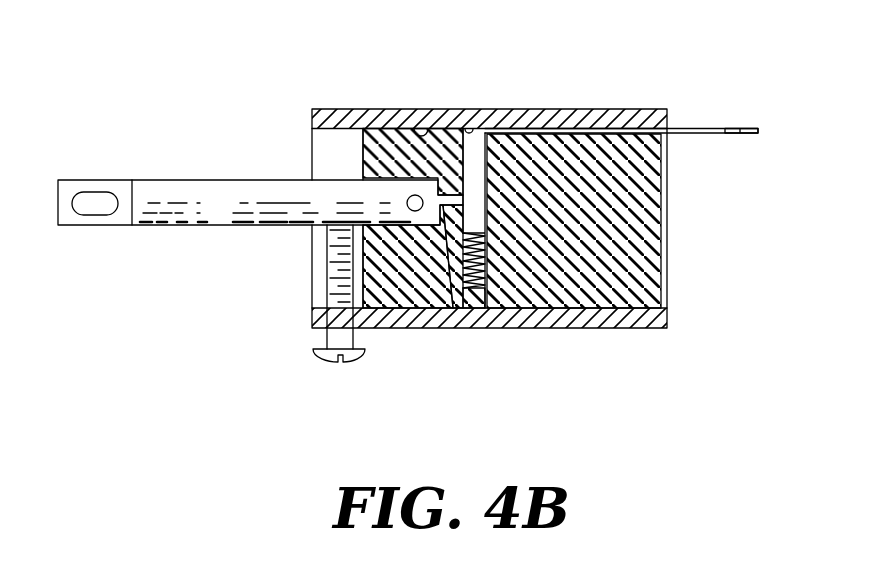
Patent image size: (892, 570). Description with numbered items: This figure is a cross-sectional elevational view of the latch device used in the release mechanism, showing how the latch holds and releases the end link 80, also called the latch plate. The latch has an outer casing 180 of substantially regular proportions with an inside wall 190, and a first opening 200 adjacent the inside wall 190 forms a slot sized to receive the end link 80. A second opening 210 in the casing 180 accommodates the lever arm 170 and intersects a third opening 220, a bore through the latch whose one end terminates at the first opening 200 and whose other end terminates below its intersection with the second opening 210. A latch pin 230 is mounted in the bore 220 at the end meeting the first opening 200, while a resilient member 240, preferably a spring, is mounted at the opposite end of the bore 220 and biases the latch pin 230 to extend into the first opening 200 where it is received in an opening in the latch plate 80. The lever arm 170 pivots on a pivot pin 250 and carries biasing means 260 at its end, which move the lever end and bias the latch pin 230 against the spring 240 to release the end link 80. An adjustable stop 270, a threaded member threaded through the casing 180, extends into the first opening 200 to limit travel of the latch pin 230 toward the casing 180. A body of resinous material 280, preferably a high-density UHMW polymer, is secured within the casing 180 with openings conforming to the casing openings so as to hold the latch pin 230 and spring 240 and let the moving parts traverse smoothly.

The end link 80 is at (706, 134).
The lever arm 170 is at (165, 208).
The outer casing 180 is at (617, 328).
The inside wall 190 is at (437, 130).
The first opening 200 is at (668, 128).
The second opening 210 is at (307, 180).
The third opening 220 is at (486, 130).
The latch pin 230 is at (440, 167).
The resilient member 240 is at (481, 289).
The pivot pin 250 is at (415, 211).
The biasing means 260 is at (453, 308).
The adjustable stop 270 is at (457, 133).
The body of resinous material 280 is at (617, 242).